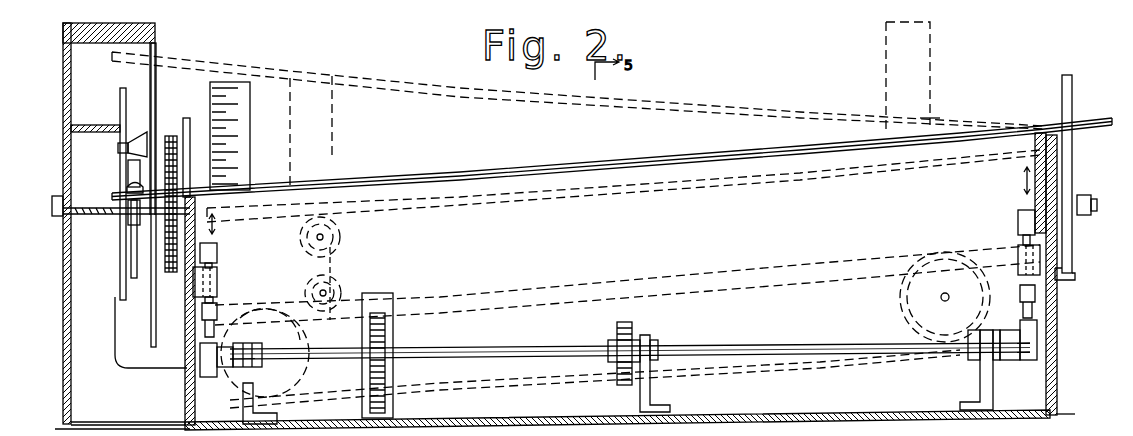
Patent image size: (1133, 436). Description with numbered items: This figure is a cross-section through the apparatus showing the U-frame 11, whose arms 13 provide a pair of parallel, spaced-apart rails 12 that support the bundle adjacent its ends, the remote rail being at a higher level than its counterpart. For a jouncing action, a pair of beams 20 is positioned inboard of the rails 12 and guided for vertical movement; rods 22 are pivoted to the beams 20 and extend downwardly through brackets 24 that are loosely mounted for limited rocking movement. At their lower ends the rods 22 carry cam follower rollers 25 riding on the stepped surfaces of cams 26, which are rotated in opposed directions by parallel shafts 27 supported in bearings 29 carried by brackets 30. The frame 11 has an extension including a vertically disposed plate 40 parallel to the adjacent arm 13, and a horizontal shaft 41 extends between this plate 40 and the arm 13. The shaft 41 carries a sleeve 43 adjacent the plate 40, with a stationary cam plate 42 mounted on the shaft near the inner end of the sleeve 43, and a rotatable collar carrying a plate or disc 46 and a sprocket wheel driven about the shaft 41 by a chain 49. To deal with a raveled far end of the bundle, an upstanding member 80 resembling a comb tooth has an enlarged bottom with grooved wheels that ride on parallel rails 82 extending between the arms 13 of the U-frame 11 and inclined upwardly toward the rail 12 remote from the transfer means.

The U-frame 11 is at (862, 426).
The rails 12 is at (190, 196).
The arms 13 is at (185, 390).
The beams 20 is at (217, 243).
The rods 22 is at (217, 262).
The brackets 24 is at (215, 287).
The cam follower rollers 25 is at (222, 318).
The cams 26 is at (213, 378).
The parallel shafts 27 is at (578, 336).
The bearings 29 is at (255, 360).
The brackets 30 is at (973, 410).
The vertically disposed plate 40 is at (63, 287).
The horizontal shaft 41 is at (53, 200).
The stationary cam plate 42 is at (120, 266).
The sleeve 43 is at (93, 197).
The plate or disc 46 is at (151, 327).
The chain 49 is at (168, 136).
The upstanding member 80 is at (958, 58).
The parallel rails 82 is at (478, 380).